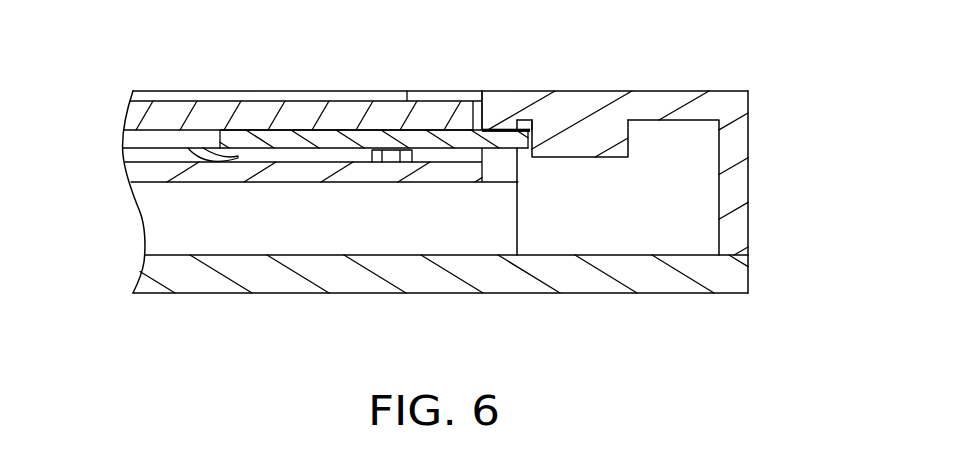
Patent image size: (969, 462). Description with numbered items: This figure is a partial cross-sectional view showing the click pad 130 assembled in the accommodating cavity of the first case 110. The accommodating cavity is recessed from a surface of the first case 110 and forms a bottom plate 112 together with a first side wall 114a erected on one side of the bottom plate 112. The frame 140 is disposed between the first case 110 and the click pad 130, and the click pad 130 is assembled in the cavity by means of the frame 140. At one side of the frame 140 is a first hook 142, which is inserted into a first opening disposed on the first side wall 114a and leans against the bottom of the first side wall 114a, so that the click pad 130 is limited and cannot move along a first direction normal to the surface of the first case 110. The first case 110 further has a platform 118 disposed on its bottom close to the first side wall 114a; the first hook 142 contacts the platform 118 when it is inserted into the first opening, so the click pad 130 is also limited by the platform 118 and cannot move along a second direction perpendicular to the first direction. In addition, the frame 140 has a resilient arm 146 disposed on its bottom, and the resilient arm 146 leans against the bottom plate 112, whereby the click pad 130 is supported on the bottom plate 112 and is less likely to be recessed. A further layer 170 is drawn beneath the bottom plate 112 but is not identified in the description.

The first case 110 is at (740, 179).
The bottom plate 112 is at (136, 174).
The first side wall 114a is at (492, 121).
The platform 118 is at (588, 137).
The click pad 130 is at (307, 110).
The frame 140 is at (256, 141).
The first hook 142 is at (504, 134).
The resilient arm 146 is at (190, 147).
The bottom plate 170 is at (740, 280).